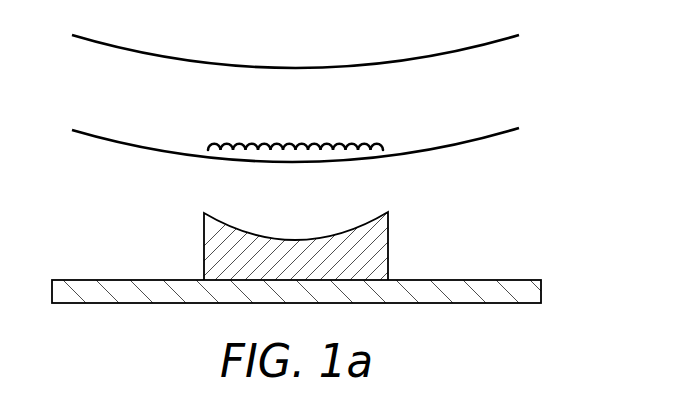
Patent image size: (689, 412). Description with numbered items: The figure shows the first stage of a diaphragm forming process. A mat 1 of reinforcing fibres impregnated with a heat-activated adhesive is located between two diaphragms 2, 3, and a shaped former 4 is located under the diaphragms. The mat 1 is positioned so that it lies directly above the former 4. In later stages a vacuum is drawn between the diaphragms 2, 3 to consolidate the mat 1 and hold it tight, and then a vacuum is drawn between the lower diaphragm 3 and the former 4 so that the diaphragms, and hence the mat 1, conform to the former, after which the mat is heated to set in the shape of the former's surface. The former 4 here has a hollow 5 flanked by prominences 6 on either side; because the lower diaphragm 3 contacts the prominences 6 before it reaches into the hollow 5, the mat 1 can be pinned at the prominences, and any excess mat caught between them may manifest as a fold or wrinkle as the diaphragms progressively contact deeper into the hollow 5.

The mat 1 is at (347, 143).
The diaphragm 2 is at (480, 143).
The lower diaphragm 3 is at (480, 48).
The shaped former 4 is at (388, 246).
The hollow 5 is at (292, 233).
The prominences 6 is at (204, 213).